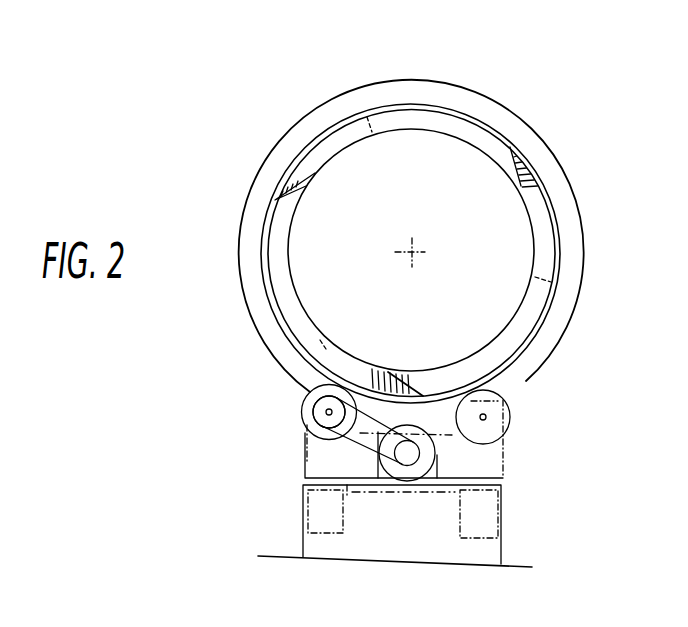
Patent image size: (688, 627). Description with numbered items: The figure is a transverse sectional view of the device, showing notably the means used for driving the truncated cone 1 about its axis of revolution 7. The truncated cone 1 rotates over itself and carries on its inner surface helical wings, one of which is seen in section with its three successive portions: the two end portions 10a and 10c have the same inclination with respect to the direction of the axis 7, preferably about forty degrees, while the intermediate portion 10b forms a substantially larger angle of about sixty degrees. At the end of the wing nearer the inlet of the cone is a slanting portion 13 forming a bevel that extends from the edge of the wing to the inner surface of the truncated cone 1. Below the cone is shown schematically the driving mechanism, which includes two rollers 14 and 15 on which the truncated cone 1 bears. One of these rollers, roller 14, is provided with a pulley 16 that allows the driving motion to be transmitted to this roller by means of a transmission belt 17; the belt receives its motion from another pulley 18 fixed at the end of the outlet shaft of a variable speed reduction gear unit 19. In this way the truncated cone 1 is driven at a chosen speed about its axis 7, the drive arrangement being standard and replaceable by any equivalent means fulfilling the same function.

The truncated cone 1 is at (233, 205).
The axis of revolution 7 is at (416, 251).
The end portion of wing 10a is at (300, 162).
The intermediate portion of wing 10b is at (421, 117).
The end portion of wing 10c is at (533, 225).
The slanting portion 13 is at (410, 393).
The roller 14 is at (302, 403).
The roller 15 is at (510, 417).
The pulley 16 is at (298, 418).
The transmission belt 17 is at (362, 448).
The pulley 18 is at (412, 462).
The variable speed reduction gear unit 19 is at (437, 461).